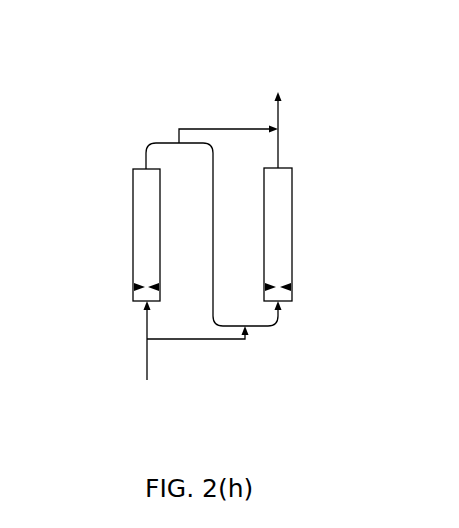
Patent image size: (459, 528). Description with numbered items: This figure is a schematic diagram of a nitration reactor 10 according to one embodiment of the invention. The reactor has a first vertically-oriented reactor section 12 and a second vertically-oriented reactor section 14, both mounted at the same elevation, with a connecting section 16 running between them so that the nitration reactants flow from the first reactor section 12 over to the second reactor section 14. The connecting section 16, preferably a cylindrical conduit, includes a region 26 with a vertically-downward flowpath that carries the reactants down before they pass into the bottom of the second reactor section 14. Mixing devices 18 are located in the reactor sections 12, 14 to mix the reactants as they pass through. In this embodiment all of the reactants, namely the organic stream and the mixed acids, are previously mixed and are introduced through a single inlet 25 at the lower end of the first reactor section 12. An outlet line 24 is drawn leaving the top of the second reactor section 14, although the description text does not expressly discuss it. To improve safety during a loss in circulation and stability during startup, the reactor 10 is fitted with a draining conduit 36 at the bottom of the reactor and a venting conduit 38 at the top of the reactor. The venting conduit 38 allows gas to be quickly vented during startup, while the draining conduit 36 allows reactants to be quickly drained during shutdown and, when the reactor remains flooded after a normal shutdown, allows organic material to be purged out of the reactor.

The nitration reactor 10 is at (164, 74).
The first vertically-oriented reactor section 12 is at (137, 196).
The second vertically-oriented reactor section 14 is at (283, 203).
The connecting section 16 is at (160, 142).
The mixing devices 18 is at (277, 287).
The product gas outlet line 24 is at (279, 108).
The inlet 25 is at (146, 364).
The region with a vertically-downward flowpath 26 is at (213, 232).
The draining conduit 36 is at (217, 340).
The venting conduit 38 is at (240, 128).